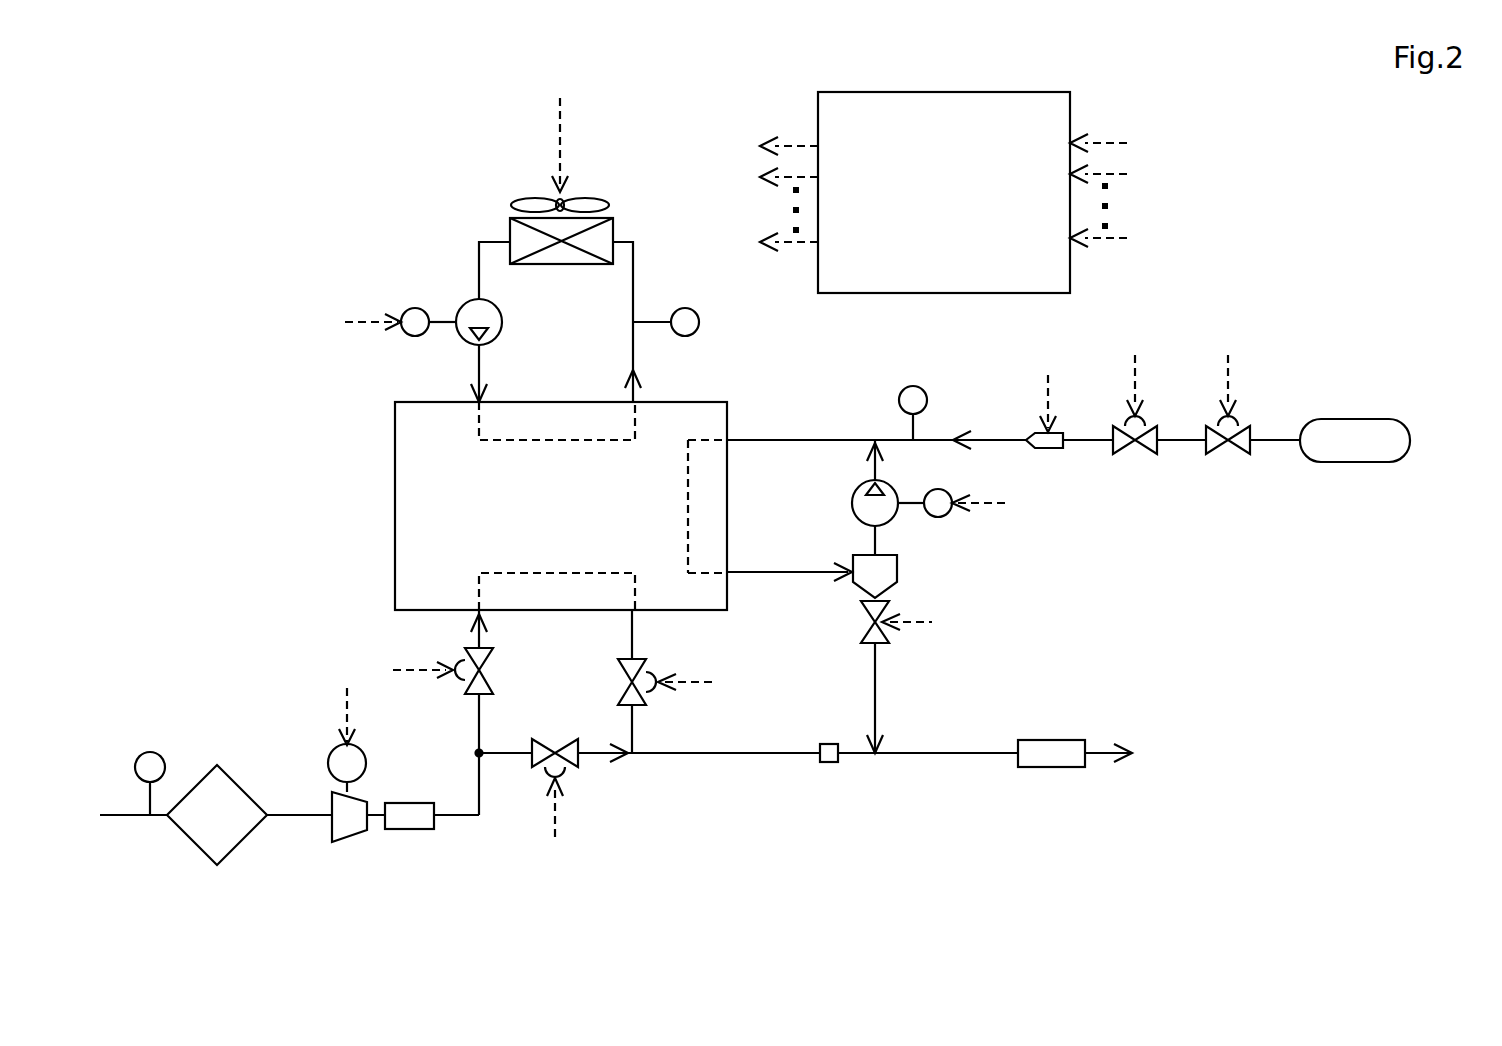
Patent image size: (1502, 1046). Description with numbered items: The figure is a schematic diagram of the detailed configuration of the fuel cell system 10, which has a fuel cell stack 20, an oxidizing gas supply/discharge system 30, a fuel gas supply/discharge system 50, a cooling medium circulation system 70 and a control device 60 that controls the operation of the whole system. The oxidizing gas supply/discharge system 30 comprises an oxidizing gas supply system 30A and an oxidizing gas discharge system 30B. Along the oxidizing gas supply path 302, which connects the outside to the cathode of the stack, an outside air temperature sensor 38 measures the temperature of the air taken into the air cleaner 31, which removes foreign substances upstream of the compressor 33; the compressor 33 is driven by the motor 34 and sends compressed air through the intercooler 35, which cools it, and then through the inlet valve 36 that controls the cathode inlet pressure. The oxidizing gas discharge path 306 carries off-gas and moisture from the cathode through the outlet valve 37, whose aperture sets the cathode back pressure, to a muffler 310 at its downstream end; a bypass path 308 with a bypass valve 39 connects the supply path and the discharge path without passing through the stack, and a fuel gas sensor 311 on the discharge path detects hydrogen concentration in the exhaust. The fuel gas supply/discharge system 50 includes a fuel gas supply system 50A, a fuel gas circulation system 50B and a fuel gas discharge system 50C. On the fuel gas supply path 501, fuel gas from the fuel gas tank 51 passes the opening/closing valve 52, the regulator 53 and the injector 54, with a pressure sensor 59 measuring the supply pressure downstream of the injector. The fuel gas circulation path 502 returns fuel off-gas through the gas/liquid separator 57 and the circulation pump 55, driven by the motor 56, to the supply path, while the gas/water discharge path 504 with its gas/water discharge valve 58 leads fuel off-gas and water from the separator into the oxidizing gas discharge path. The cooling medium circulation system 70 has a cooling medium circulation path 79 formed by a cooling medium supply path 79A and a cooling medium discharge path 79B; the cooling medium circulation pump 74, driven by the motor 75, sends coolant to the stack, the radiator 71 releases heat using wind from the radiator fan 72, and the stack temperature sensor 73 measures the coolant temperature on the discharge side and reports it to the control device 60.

The fuel cell system 10 is at (410, 137).
The fuel cell stack 20 is at (395, 463).
The oxidizing gas supply/discharge system 30 is at (277, 636).
The oxidizing gas supply system 30A is at (270, 752).
The oxidizing gas discharge system 30B is at (687, 803).
The air cleaner 31 is at (195, 775).
The compressor 33 is at (335, 830).
The motor 34 is at (330, 752).
The intercooler 35 is at (390, 829).
The inlet valve 36 is at (462, 660).
The outlet valve 37 is at (618, 672).
The outside air temperature sensor 38 is at (140, 755).
The bypass valve 39 is at (545, 775).
The oxidizing gas supply path 302 is at (460, 815).
The oxidizing gas discharge path 306 is at (758, 750).
The bypass path 308 is at (608, 753).
The muffler 310 is at (1050, 740).
The fuel gas sensor 311 is at (829, 762).
The fuel gas supply/discharge system 50 is at (1372, 350).
The fuel gas supply system 50A is at (1185, 540).
The fuel gas circulation system 50B is at (828, 508).
The fuel gas discharge system 50C is at (995, 636).
The fuel gas tank 51 is at (1350, 419).
The opening/closing valve 52 is at (1233, 452).
The regulator 53 is at (1140, 452).
The injector 54 is at (1045, 450).
The circulation pump 55 is at (890, 522).
The motor 56 is at (938, 488).
The gas/liquid separator 57 is at (897, 570).
The gas/water discharge valve 58 is at (898, 635).
The pressure sensor 59 is at (915, 386).
The fuel gas supply path 501 is at (992, 440).
The fuel gas circulation path 502 is at (788, 572).
The gas/water discharge path 504 is at (874, 700).
The control device 60 is at (998, 92).
The cooling medium circulation system 70 is at (422, 200).
The radiator 71 is at (612, 222).
The radiator fan 72 is at (525, 195).
The stack temperature sensor 73 is at (690, 308).
The cooling medium circulation pump 74 is at (502, 322).
The motor 75 is at (416, 308).
The cooling medium circulation path 79 is at (645, 290).
The cooling medium supply path 79A is at (479, 265).
The cooling medium discharge path 79B is at (635, 353).